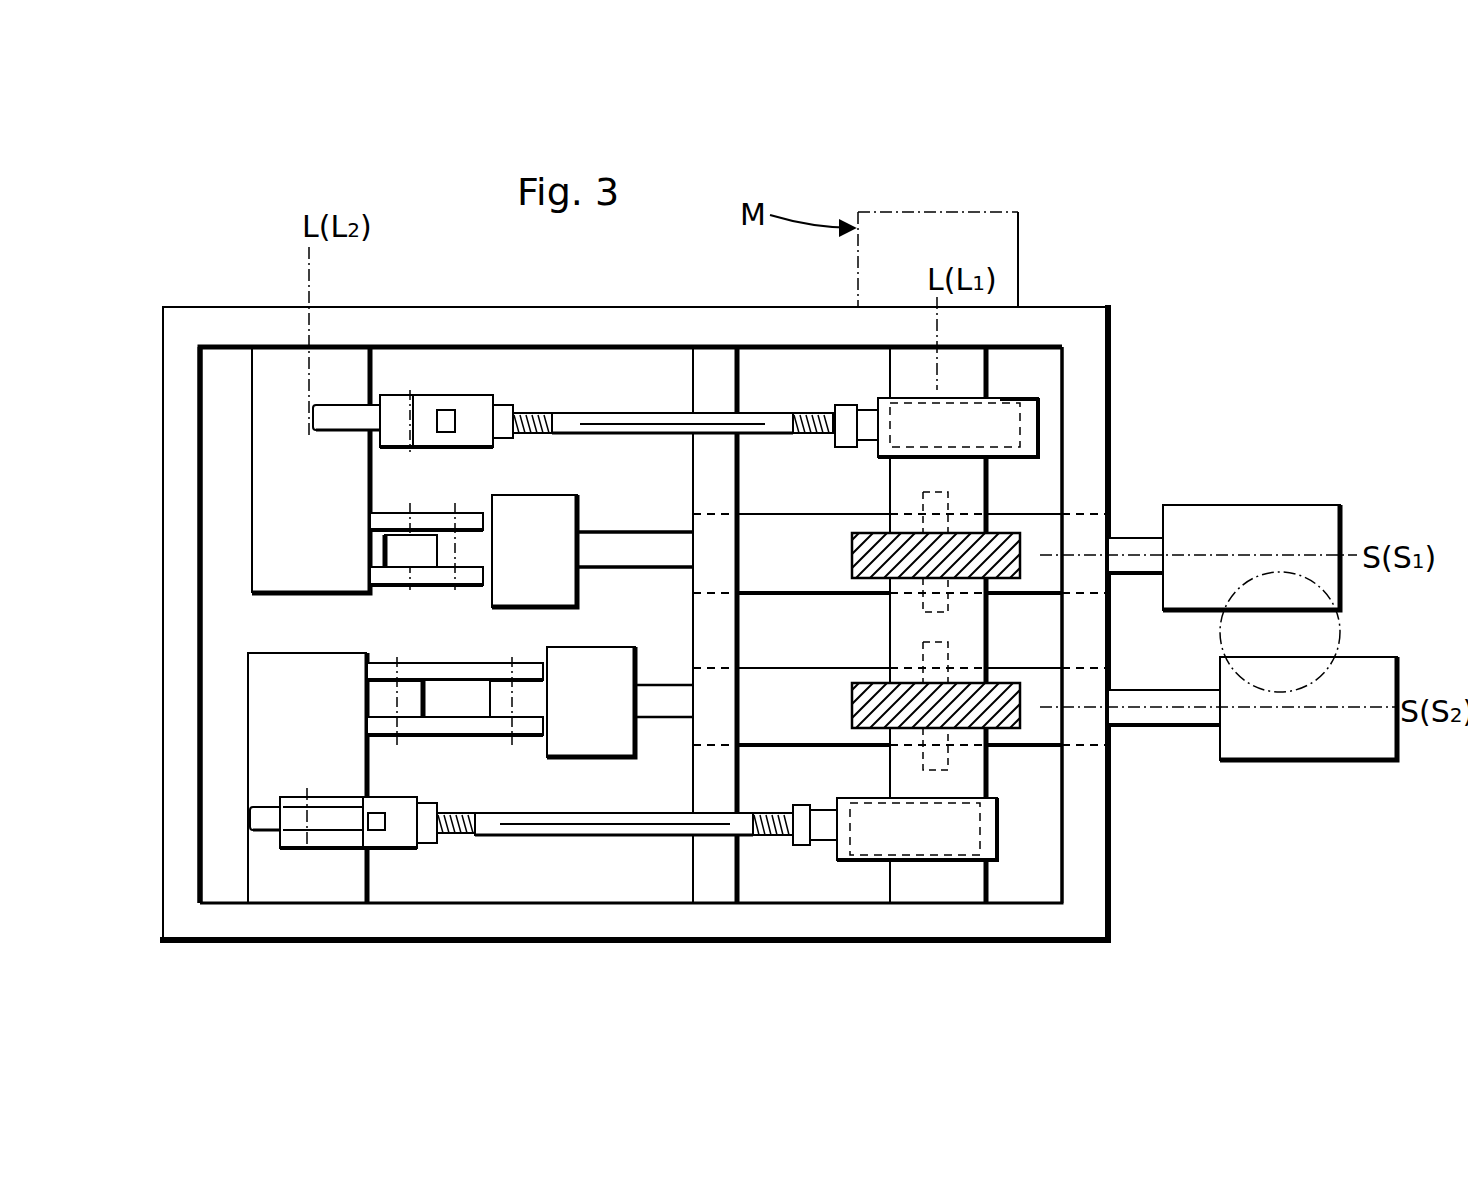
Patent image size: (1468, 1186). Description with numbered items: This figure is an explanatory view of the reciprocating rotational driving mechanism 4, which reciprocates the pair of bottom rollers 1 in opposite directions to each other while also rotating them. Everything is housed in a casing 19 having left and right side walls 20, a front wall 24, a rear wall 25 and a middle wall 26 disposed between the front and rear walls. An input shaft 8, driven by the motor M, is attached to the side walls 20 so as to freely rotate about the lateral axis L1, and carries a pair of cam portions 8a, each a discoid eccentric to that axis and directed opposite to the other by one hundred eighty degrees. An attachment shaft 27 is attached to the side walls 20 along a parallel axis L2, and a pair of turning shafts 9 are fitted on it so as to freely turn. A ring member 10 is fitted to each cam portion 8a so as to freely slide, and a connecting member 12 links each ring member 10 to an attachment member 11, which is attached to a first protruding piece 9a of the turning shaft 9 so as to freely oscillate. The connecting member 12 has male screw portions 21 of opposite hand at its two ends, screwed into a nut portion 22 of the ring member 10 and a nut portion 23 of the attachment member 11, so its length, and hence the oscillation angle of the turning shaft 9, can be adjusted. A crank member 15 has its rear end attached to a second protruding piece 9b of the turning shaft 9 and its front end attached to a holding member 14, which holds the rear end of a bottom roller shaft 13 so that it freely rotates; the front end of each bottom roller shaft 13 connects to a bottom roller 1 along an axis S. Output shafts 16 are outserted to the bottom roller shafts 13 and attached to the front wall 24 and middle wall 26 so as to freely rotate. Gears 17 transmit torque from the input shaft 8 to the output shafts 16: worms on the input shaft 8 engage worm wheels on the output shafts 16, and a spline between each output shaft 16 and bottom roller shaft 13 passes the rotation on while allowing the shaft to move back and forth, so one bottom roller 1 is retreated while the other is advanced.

The bottom roller 1 is at (1300, 520).
The reciprocating rotational driving mechanism 4 is at (1162, 432).
The input shaft 8 is at (988, 775).
The cam portion 8a is at (1010, 400).
The turning shaft 9 is at (285, 360).
The first protruding piece 9a is at (353, 428).
The second protruding piece 9b is at (393, 588).
The ring member 10 is at (1035, 412).
The attachment member 11 is at (465, 396).
The connecting member 12 is at (627, 412).
The bottom roller shaft 13 is at (641, 528).
The holding member 14 is at (540, 500).
The crank member 15 is at (413, 565).
The output shaft 16 is at (752, 518).
The gear 17 is at (853, 554).
The casing 19 is at (1112, 893).
The side wall 20 is at (630, 322).
The male screw portion 21 is at (534, 412).
The nut portion 22 is at (848, 405).
The nut portion 23 is at (501, 404).
The front wall 24 is at (1095, 478).
The rear wall 25 is at (172, 594).
The middle wall 26 is at (737, 880).
The attachment shaft 27 is at (290, 630).